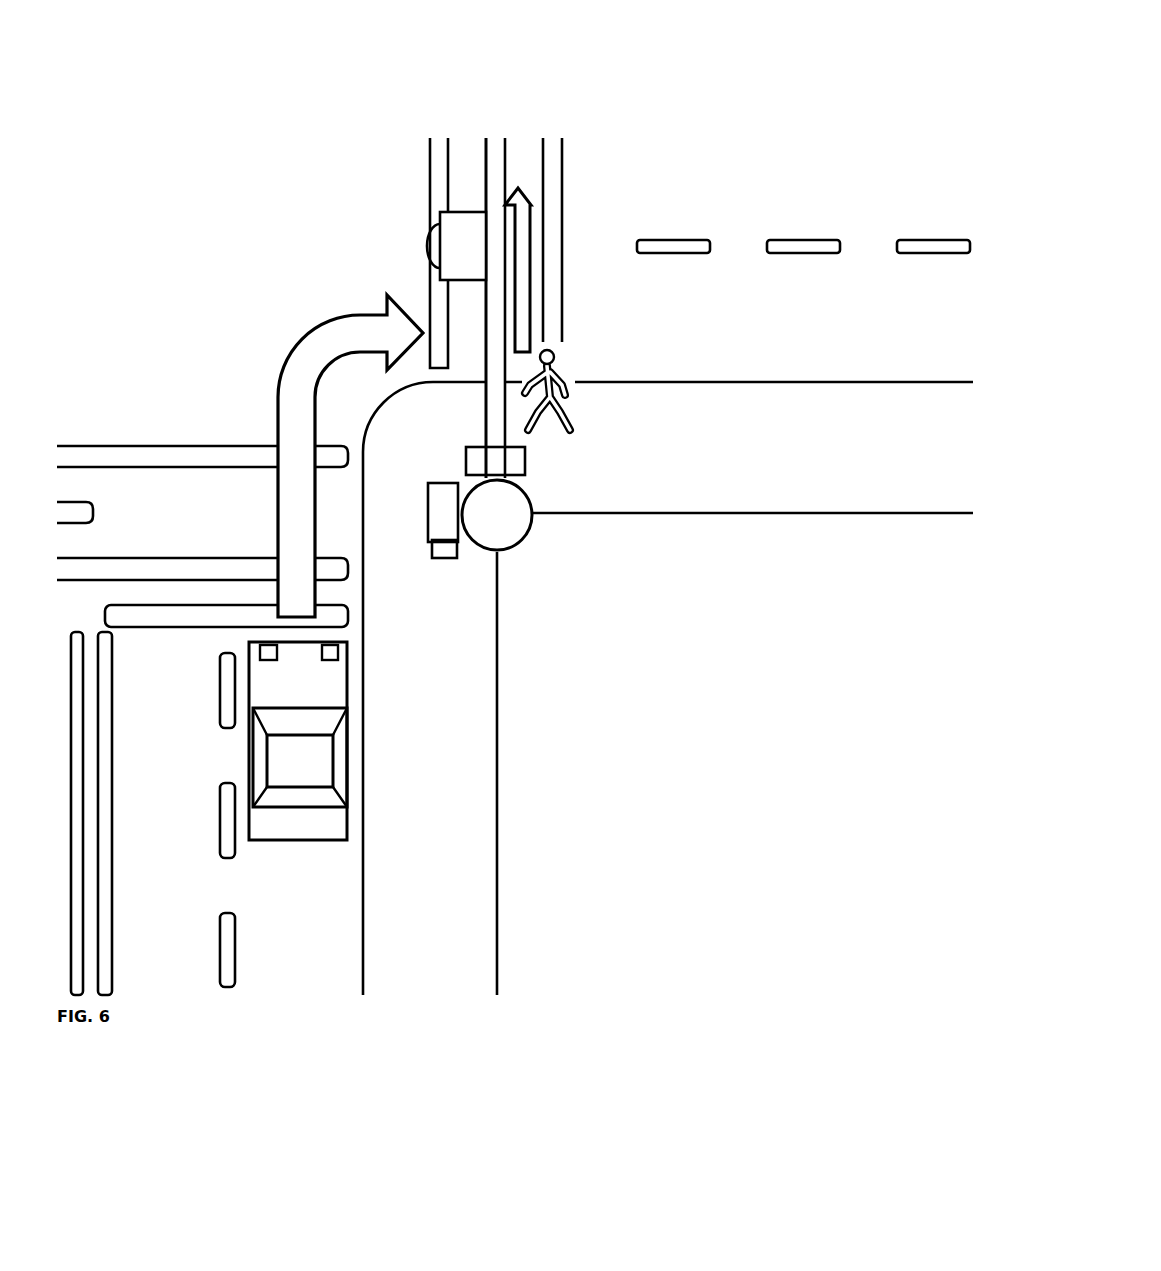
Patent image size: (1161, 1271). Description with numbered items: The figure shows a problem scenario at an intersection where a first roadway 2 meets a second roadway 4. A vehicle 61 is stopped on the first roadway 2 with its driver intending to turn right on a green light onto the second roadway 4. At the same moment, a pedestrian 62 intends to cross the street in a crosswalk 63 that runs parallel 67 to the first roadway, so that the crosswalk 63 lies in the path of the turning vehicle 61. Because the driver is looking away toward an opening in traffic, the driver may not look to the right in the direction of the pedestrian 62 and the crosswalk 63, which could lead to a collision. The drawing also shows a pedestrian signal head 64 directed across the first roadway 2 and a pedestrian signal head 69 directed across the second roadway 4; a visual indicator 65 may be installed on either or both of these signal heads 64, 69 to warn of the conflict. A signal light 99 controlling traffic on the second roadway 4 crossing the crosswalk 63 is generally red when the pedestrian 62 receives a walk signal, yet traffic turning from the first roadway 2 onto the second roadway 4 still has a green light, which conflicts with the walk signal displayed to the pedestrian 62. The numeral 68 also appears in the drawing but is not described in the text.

The first roadway 2 is at (292, 982).
The second roadway 4 is at (785, 160).
The vehicle 61 is at (308, 897).
The pedestrian 62 is at (592, 480).
The crosswalk 63 is at (457, 170).
The pedestrian signal head 64 is at (435, 520).
The visual indicator 65 is at (457, 555).
The parallel direction 67 is at (518, 186).
The pedestrian lane 68 is at (533, 248).
The pedestrian signal head 69 is at (522, 473).
The signal light 99 is at (425, 238).